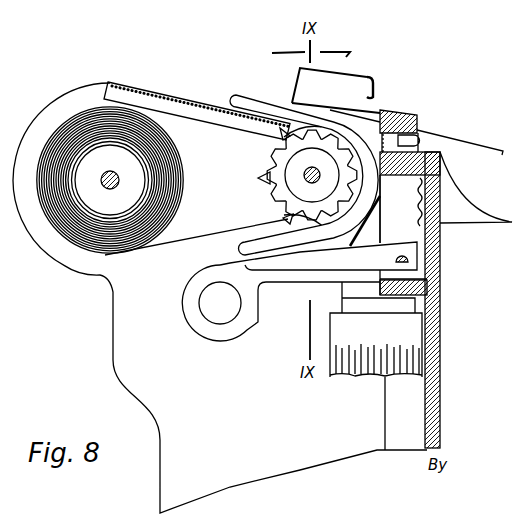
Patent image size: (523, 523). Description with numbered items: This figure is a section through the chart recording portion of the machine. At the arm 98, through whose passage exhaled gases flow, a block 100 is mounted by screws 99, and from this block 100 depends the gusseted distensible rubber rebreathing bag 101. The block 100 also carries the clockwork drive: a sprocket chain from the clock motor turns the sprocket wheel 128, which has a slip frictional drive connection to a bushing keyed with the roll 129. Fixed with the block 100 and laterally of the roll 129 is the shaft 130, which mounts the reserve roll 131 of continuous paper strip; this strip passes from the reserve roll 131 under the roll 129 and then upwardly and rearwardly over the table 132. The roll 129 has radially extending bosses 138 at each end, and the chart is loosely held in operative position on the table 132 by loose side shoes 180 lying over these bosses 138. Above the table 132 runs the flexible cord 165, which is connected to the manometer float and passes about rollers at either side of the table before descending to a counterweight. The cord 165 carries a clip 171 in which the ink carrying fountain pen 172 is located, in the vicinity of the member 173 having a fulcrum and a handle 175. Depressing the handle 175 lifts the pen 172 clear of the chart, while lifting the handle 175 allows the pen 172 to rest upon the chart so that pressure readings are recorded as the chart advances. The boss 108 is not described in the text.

The arm 98 is at (456, 230).
The screws 99 is at (418, 190).
The block 100 is at (340, 283).
The gusseted distensible rubber rebreathing bag 101 is at (345, 378).
The boss with bore 108 is at (221, 326).
The sprocket wheel 128 is at (270, 160).
The roll 129 is at (280, 203).
The shaft 130 is at (100, 186).
The reserve roll 131 is at (172, 214).
The table 132 is at (195, 85).
The radially extending bosses 138 is at (258, 178).
The flexible cord 165 is at (378, 95).
The clip 171 is at (374, 79).
The fountain pen 172 is at (317, 82).
The member 173 is at (326, 102).
The handle 175 is at (498, 148).
The loose side shoes 180 is at (270, 85).